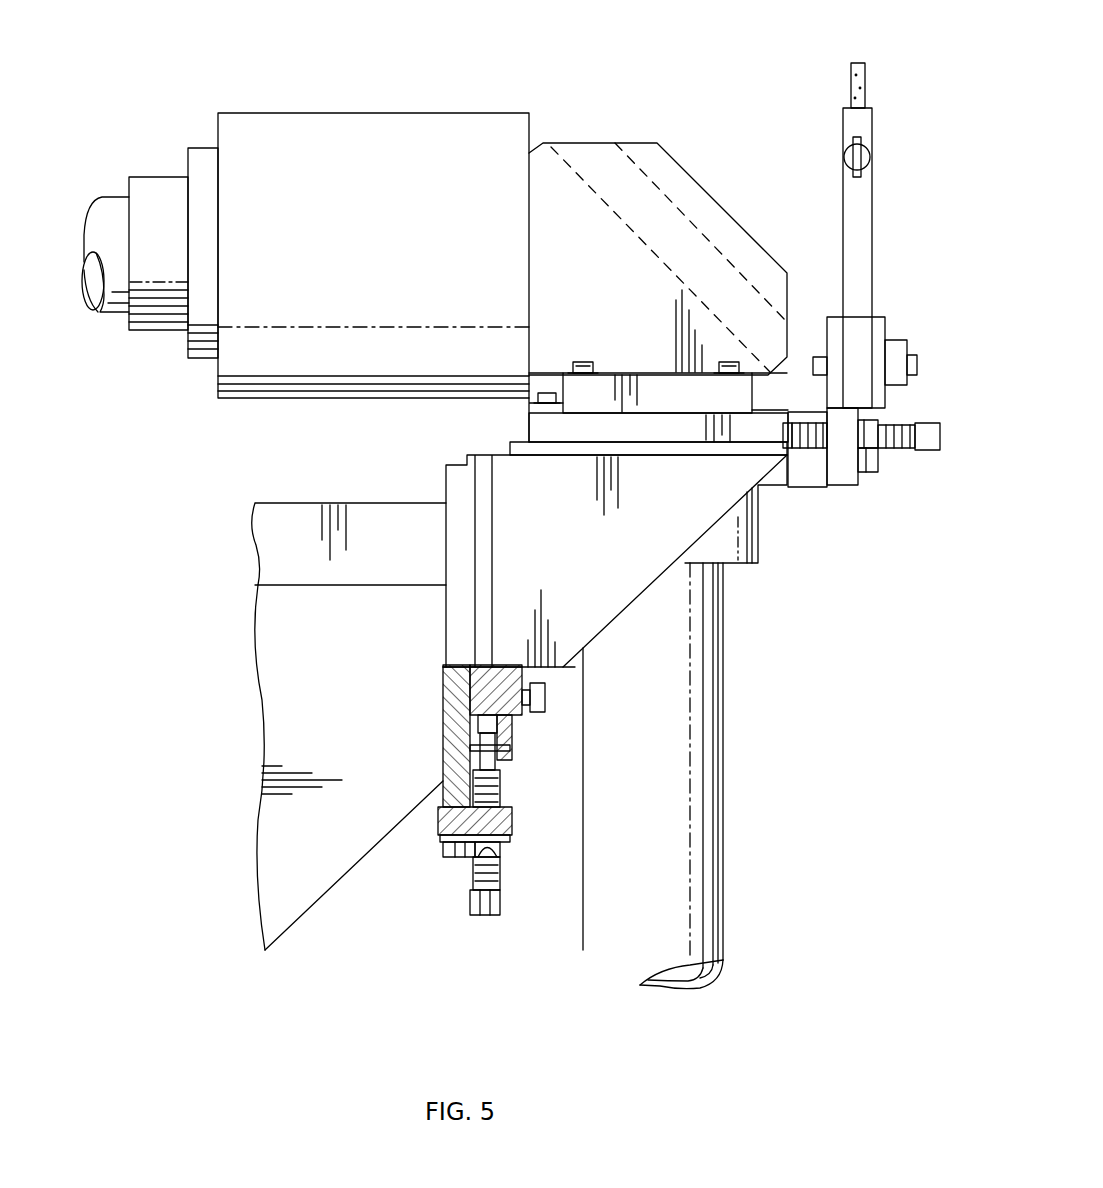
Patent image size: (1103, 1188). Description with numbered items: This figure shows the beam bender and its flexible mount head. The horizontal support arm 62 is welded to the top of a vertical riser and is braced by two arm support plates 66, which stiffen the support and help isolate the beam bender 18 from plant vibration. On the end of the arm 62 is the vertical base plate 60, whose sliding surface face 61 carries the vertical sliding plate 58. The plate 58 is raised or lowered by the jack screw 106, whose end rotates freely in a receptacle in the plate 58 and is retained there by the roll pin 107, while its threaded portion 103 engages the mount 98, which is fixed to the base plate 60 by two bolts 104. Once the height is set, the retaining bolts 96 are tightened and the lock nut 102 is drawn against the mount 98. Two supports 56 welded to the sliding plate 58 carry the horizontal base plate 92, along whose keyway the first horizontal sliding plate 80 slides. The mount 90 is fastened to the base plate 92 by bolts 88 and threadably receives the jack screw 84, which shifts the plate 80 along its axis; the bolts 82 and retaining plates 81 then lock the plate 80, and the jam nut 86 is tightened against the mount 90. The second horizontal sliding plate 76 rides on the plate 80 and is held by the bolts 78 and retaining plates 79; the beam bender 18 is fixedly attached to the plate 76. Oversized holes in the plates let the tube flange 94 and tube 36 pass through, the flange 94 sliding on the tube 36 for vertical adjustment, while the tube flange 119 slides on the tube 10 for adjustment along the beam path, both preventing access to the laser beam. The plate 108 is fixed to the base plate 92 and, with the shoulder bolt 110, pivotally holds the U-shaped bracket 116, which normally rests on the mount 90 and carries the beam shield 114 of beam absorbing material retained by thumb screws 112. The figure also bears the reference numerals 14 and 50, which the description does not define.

The tube 10 is at (122, 212).
The applicator body 14 is at (410, 110).
The beam bender 18 is at (680, 155).
The tube 36 is at (680, 625).
The mounting assembly 50 is at (820, 220).
The supports 56 is at (627, 572).
The vertical sliding plate 58 is at (497, 667).
The vertical base plate 60 is at (455, 730).
The sliding surface face 61 is at (475, 702).
The horizontal support arm 62 is at (292, 522).
The arm support plates 66 is at (290, 682).
The second horizontal sliding plate 76 is at (745, 400).
The bolts 78 is at (727, 368).
The retaining plates 79 is at (578, 368).
The first horizontal sliding plate 80 is at (540, 428).
The retaining plates 81 is at (525, 407).
The bolts 82 is at (550, 395).
The jack screw 84 is at (898, 428).
The jam nut 86 is at (878, 455).
The bolts 88 is at (870, 480).
The mount 90 is at (840, 470).
The horizontal base plate 92 is at (805, 470).
The tube flange 94 is at (758, 538).
The retaining bolts 96 is at (535, 708).
The mount 98 is at (515, 822).
The lock nut 102 is at (505, 858).
The threaded portion 103 is at (500, 878).
The bolts 104 is at (450, 858).
The jack screw 106 is at (490, 910).
The roll pin 107 is at (505, 752).
The plate 108 is at (875, 320).
The shoulder bolt 110 is at (903, 337).
The thumb screws 112 is at (845, 152).
The beam shield 114 is at (863, 100).
The U-shaped bracket 116 is at (873, 192).
The tube flange 119 is at (165, 190).